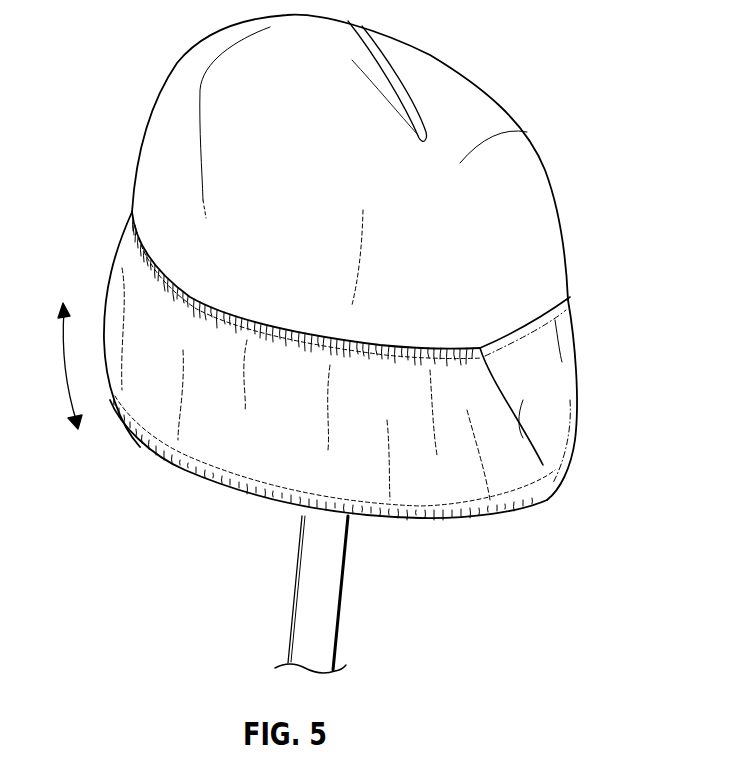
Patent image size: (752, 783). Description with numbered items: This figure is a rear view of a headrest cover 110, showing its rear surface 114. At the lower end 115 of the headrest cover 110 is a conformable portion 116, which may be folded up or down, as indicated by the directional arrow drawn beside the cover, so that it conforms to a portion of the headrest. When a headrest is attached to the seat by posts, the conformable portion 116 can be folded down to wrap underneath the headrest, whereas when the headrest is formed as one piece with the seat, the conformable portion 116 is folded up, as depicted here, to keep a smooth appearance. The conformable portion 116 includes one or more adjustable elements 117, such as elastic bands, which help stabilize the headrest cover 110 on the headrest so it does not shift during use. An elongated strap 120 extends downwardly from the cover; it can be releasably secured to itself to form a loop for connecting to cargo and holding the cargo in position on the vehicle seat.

The headrest cover 110 is at (346, 344).
The rear surface 114 is at (463, 236).
The lower end 115 is at (377, 403).
The conformable portion 116 is at (495, 437).
The adjustable elements 117 is at (452, 347).
The elongated strap 120 is at (330, 562).